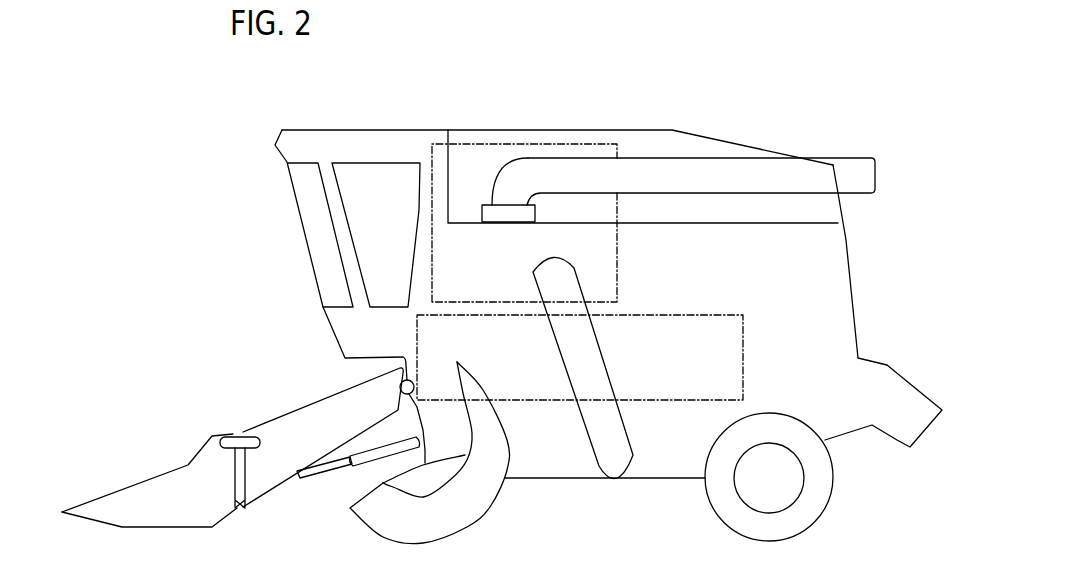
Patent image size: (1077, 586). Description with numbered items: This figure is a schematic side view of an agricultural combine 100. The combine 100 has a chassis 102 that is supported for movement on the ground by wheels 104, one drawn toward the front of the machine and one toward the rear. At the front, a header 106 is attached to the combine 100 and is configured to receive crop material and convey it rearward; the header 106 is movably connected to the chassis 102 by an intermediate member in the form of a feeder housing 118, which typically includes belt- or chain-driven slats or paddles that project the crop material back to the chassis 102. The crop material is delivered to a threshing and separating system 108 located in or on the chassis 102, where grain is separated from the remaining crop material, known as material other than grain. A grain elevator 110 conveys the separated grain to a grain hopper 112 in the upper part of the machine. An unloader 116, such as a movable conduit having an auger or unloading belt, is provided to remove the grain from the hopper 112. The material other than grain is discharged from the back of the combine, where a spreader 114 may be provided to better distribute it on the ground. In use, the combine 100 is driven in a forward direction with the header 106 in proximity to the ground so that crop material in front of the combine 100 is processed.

The agricultural combine 100 is at (824, 97).
The chassis 102 is at (834, 293).
The wheels 104 is at (470, 497).
The header 106 is at (185, 492).
The threshing and separating system 108 is at (533, 403).
The grain elevator 110 is at (619, 480).
The grain hopper 112 is at (523, 137).
The spreader 114 is at (908, 403).
The unloader 116 is at (647, 175).
The feeder housing 118 is at (338, 403).